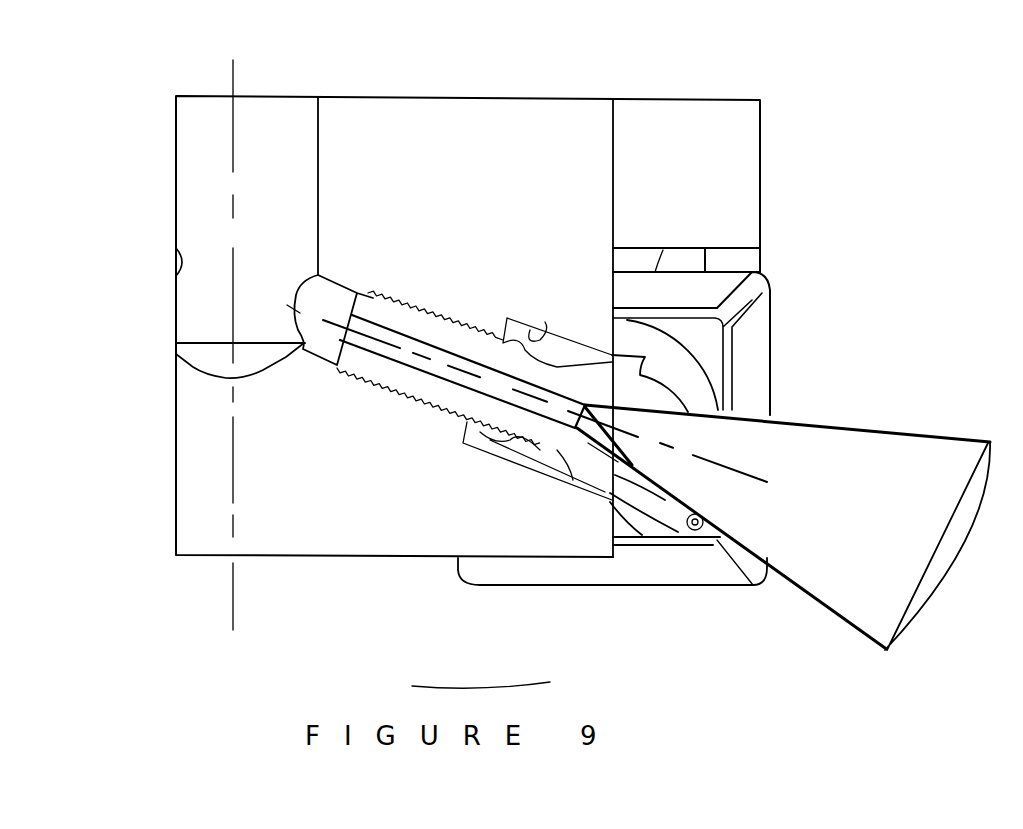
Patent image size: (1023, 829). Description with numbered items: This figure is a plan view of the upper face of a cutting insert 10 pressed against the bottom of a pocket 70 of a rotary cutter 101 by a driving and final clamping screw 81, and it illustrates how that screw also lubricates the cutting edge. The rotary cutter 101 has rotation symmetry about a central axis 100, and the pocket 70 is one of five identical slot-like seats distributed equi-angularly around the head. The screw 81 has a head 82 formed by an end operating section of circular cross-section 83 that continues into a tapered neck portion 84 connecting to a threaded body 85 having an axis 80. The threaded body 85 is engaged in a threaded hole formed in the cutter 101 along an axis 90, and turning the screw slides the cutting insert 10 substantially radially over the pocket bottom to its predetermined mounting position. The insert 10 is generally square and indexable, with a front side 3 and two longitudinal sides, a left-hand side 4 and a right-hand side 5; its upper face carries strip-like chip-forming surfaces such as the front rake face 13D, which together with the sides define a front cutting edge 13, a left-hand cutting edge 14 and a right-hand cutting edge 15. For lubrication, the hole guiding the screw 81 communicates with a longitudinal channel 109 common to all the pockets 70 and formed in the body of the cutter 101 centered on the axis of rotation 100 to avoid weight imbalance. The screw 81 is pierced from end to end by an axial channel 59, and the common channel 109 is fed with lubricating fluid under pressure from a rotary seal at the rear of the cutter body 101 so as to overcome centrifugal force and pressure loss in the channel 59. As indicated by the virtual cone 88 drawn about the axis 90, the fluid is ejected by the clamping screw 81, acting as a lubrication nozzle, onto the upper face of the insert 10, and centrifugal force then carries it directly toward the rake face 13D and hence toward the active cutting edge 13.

The central axis 100 is at (233, 72).
The rotary cutter 101 is at (535, 99).
The longitudinal channel 109 is at (300, 165).
The axis 90 is at (262, 298).
The axial channel 59 is at (410, 343).
The threaded body 85 is at (405, 380).
The axis 80 is at (740, 472).
The driving and final clamping screw 81 is at (577, 450).
The head 82 is at (481, 700).
The end operating section of circular cross-section 83 is at (590, 477).
The tapered neck portion 84 is at (562, 467).
The right-hand lateral side 5 is at (670, 272).
The right-hand horizontal cutting edge 15 is at (655, 272).
The pocket 70 is at (787, 271).
The strip-like surface for chip forming 13D is at (760, 333).
The front side 3 is at (770, 353).
The front horizontal cutting edge 13 is at (773, 377).
The virtual cone 88 is at (893, 430).
The left-hand horizontal cutting edge 14 is at (598, 587).
The left-hand lateral side 4 is at (660, 587).
The cutting insert 10 is at (722, 570).